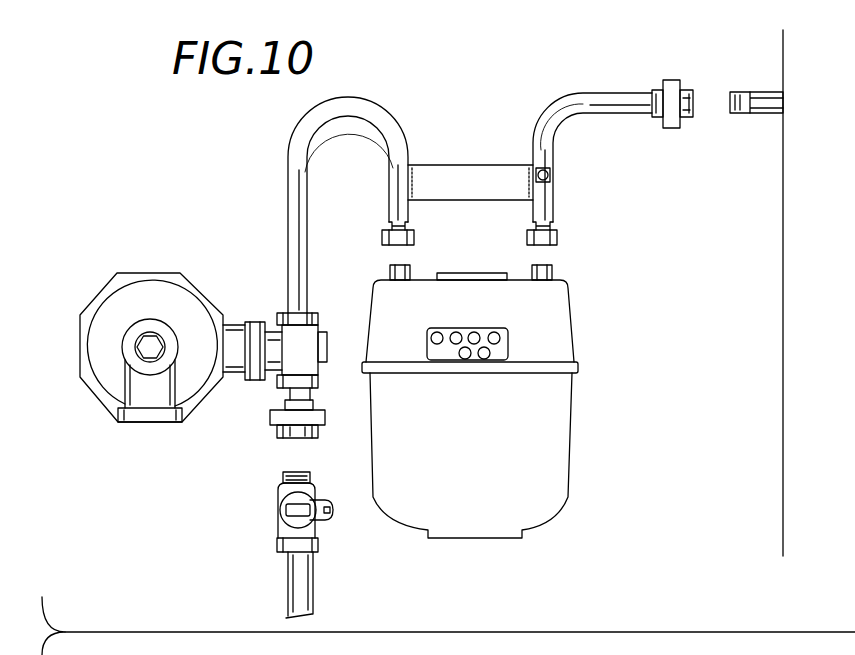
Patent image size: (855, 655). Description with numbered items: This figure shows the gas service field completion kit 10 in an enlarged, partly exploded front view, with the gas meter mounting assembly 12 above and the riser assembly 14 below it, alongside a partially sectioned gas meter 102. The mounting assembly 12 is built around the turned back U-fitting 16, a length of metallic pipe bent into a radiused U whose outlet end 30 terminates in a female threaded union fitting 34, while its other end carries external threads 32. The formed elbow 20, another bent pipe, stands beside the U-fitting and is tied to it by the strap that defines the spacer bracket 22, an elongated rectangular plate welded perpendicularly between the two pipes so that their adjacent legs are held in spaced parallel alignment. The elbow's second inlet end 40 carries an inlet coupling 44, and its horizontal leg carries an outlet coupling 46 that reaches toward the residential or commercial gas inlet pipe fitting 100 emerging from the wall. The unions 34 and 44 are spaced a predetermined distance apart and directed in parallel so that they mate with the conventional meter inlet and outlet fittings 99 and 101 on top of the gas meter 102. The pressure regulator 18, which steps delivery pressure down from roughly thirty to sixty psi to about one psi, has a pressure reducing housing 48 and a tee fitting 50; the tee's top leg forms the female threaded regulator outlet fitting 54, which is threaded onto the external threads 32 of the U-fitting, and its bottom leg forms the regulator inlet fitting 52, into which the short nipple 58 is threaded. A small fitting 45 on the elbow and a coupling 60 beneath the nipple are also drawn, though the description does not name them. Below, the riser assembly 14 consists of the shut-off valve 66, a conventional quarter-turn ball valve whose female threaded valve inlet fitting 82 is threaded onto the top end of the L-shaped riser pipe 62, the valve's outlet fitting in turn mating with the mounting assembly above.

The gas service field completion kit 10 is at (232, 157).
The gas meter mounting assembly 12 is at (568, 156).
The riser assembly 14 is at (275, 538).
The turned back U-fitting 16 is at (355, 92).
The pressure regulator 18 is at (140, 327).
The elbow 20 is at (546, 102).
The spacer bracket 22 is at (483, 164).
The outlet end 30 is at (390, 196).
The external threads 32 is at (284, 312).
The female threaded union fitting 34 is at (416, 236).
The second inlet end 40 is at (556, 212).
The inlet coupling 44 is at (558, 243).
The fitting 45 is at (536, 205).
The outlet coupling 46 is at (671, 80).
The pressure reducing housing 48 is at (86, 388).
The tee fitting 50 is at (320, 366).
The regulator inlet fitting 52 is at (316, 388).
The regulator outlet fitting 54 is at (314, 313).
The short nipple 58 is at (290, 394).
The coupling 60 is at (276, 434).
The riser pipe 62 is at (288, 573).
The shut-off valve 66 is at (318, 542).
The valve inlet fitting 82 is at (311, 477).
The meter inlet fitting 99 is at (390, 268).
The gas inlet pipe fitting 100 is at (758, 92).
The meter outlet fitting 101 is at (554, 271).
The gas meter 102 is at (570, 437).